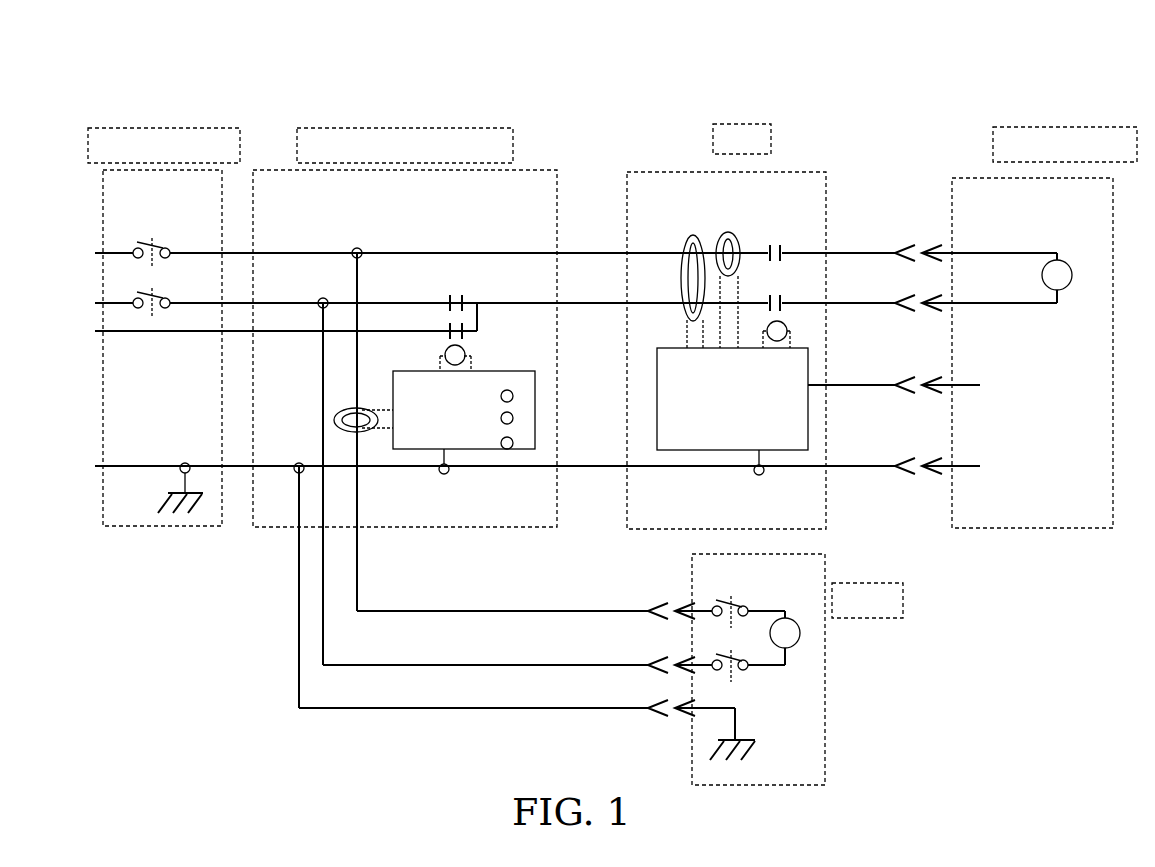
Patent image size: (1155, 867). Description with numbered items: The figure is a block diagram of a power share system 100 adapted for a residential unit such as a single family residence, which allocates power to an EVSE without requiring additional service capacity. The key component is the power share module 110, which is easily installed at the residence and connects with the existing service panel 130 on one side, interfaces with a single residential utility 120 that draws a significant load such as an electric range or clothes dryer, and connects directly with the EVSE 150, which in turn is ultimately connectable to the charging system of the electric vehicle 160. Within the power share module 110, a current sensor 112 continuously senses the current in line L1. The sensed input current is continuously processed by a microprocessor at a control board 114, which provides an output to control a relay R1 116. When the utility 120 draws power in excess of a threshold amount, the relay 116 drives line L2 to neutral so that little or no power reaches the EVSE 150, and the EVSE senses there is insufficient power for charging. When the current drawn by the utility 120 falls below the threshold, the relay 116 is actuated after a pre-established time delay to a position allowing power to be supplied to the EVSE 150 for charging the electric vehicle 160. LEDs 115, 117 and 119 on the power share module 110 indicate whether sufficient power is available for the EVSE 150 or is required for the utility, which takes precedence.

The power share system 100 is at (300, 106).
The power share module 110 is at (480, 528).
The current sensor 112 is at (417, 432).
The control board 114 is at (479, 385).
The LED 115 is at (513, 396).
The relay R1 116 is at (445, 350).
The LED 117 is at (513, 418).
The LED 119 is at (511, 447).
The residential utility 120 is at (826, 645).
The service panel 130 is at (153, 528).
The EVSE 150 is at (825, 507).
The electric vehicle 160 is at (1003, 530).